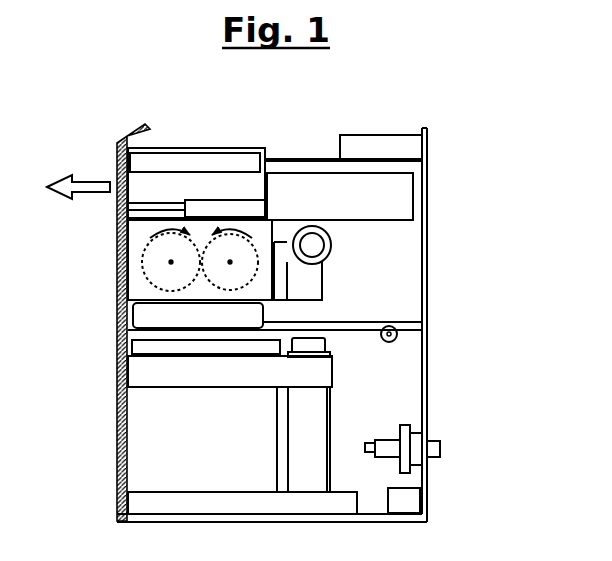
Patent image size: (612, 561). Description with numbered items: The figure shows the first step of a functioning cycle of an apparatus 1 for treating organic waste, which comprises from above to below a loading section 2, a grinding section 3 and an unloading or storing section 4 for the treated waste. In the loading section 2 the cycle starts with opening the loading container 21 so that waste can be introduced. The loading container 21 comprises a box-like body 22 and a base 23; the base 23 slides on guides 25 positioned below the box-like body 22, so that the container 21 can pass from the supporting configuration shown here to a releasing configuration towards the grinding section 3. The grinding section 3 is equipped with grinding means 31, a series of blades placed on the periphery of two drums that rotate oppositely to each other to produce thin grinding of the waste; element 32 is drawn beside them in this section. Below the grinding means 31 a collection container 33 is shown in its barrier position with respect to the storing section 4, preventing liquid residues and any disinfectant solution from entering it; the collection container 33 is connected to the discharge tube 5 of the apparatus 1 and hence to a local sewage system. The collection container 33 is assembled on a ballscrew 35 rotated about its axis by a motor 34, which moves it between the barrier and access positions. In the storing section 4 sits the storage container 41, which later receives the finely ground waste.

The apparatus 1 is at (522, 163).
The loading section 2 is at (105, 154).
The grinding section 3 is at (105, 265).
The unloading section / storing section 4 is at (100, 488).
The discharge tube 5 is at (462, 462).
The loading container 21 is at (200, 127).
The box-like body 22 is at (247, 148).
The base 23 is at (403, 210).
The guides 25 is at (122, 214).
The grinding means 31 is at (136, 288).
The grinder motor 32 is at (331, 250).
The collection container 33 is at (143, 317).
The motor 34 is at (400, 334).
The ballscrew 35 is at (413, 325).
The storage container 41 is at (145, 440).